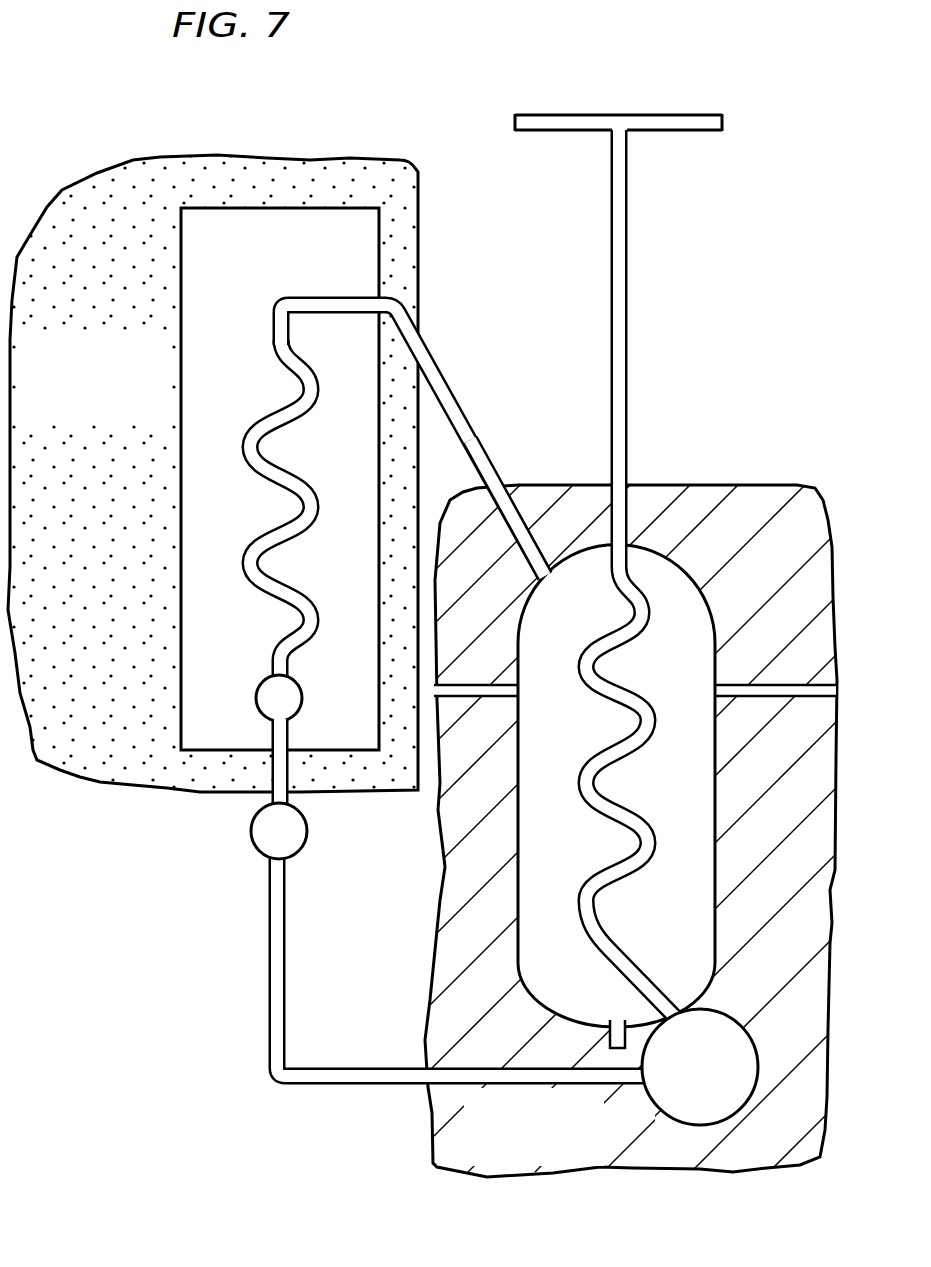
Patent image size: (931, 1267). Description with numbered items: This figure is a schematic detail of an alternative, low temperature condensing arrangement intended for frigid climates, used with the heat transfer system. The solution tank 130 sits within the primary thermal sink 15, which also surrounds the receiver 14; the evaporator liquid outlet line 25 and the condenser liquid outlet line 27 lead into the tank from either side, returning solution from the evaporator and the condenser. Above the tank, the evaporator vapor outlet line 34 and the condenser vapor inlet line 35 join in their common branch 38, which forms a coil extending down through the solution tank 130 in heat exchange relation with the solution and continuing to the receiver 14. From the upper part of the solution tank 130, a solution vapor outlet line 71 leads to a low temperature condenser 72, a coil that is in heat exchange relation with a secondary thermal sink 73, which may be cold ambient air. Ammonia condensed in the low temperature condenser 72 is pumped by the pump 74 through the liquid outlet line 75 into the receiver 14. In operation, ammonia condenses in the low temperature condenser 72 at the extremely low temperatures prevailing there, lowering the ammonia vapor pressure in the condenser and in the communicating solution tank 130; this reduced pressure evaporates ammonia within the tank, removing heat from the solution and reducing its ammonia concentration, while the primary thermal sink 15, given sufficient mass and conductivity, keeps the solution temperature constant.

The receiver 14 is at (707, 1106).
The primary thermal sink 15 is at (580, 1166).
The evaporator liquid outlet line 25 is at (490, 682).
The condenser liquid outlet line 27 is at (790, 682).
The evaporator vapor outlet line 34 is at (580, 121).
The condenser vapor inlet line 35 is at (695, 115).
The common branch 38 is at (627, 193).
The solution vapor outlet line 71 is at (447, 398).
The low temperature condenser 72 is at (240, 324).
The secondary thermal sink 73 is at (145, 419).
The pump 74 is at (306, 840).
The liquid outlet line 75 is at (284, 982).
The solution tank 130 is at (568, 676).